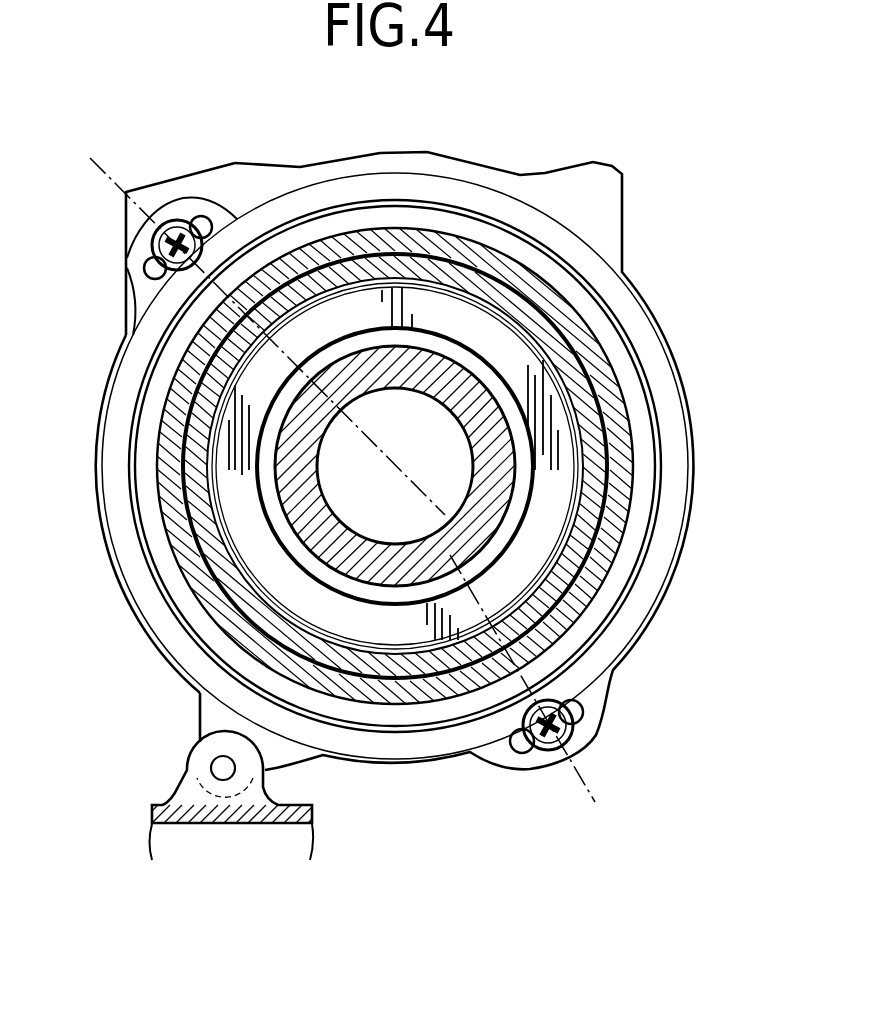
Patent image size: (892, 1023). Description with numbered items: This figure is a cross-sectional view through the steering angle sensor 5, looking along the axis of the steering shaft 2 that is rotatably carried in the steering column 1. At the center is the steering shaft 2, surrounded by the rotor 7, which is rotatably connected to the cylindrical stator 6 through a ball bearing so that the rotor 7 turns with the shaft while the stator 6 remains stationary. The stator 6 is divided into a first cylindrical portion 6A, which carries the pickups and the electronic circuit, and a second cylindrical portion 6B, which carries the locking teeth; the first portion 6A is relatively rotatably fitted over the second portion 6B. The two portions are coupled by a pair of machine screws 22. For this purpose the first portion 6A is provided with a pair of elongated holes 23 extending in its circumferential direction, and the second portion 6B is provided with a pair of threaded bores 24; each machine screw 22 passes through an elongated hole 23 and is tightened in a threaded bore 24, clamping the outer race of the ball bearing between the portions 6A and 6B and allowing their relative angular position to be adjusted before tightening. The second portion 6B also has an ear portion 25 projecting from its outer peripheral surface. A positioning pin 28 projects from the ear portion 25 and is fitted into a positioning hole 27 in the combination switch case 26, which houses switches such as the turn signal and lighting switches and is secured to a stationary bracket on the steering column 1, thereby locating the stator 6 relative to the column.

The steering column 1 is at (560, 443).
The steering shaft 2 is at (409, 378).
The steering angle sensor 5 is at (648, 226).
The stator 6 is at (127, 266).
The first cylindrical portion 6A is at (127, 225).
The second cylindrical portion 6B is at (95, 319).
The rotor 7 is at (395, 262).
The machine screws 22 is at (204, 219).
The elongated holes 23 is at (185, 221).
The threaded bores 24 is at (163, 226).
The ear portion 25 is at (196, 706).
The combination switch case 26 is at (303, 818).
The positioning hole 27 is at (212, 767).
The positioning pin 28 is at (238, 772).